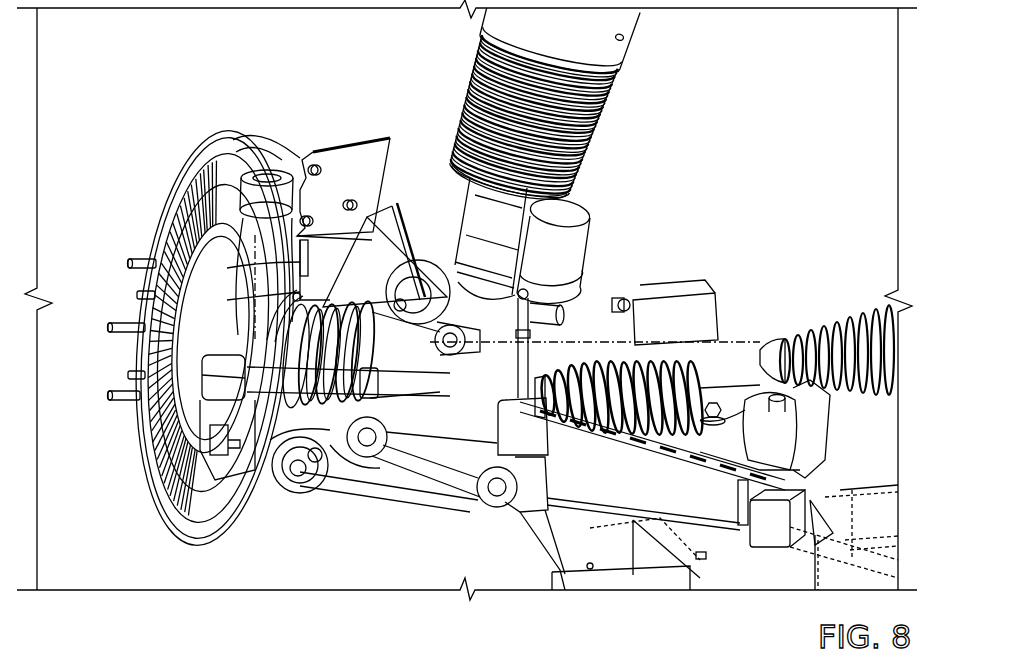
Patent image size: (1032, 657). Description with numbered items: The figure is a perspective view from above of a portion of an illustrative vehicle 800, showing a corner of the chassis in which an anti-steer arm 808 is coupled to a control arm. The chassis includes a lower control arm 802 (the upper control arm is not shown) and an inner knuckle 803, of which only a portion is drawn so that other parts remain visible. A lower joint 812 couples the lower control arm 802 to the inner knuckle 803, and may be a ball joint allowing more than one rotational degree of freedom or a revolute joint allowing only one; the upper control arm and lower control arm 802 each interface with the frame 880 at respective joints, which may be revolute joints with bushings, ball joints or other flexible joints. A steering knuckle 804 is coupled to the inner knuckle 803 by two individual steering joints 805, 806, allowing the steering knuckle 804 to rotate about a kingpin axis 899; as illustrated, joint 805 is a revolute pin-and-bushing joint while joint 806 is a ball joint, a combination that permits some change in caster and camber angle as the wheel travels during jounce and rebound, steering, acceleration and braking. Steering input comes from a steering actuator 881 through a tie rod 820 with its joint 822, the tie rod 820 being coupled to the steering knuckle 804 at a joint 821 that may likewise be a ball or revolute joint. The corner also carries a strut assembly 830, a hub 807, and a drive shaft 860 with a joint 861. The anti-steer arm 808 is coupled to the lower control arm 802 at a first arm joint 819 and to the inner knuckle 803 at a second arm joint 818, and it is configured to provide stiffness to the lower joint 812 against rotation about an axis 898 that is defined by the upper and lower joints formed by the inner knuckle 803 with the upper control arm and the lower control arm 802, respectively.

The vehicle 800 is at (845, 76).
The lower control arm 802 is at (420, 493).
The inner knuckle 803 is at (333, 147).
The steering knuckle 804 is at (210, 148).
The steering joint 805 is at (233, 533).
The steering joint 806 is at (253, 243).
The hub 807 is at (167, 232).
The anti-steer arm 808 is at (440, 462).
The lower joint 812 is at (290, 500).
The second arm joint 818 is at (352, 520).
The first arm joint 819 is at (497, 500).
The tie rod 820 is at (337, 480).
The joint 821 is at (190, 530).
The joint 822 is at (623, 347).
The strut assembly 830 is at (607, 88).
The drive shaft 860 is at (713, 317).
The joint 861 is at (863, 317).
The frame 880 is at (617, 543).
The steering actuator 881 is at (783, 330).
The axis 898 is at (228, 272).
The kingpin axis 899 is at (260, 300).